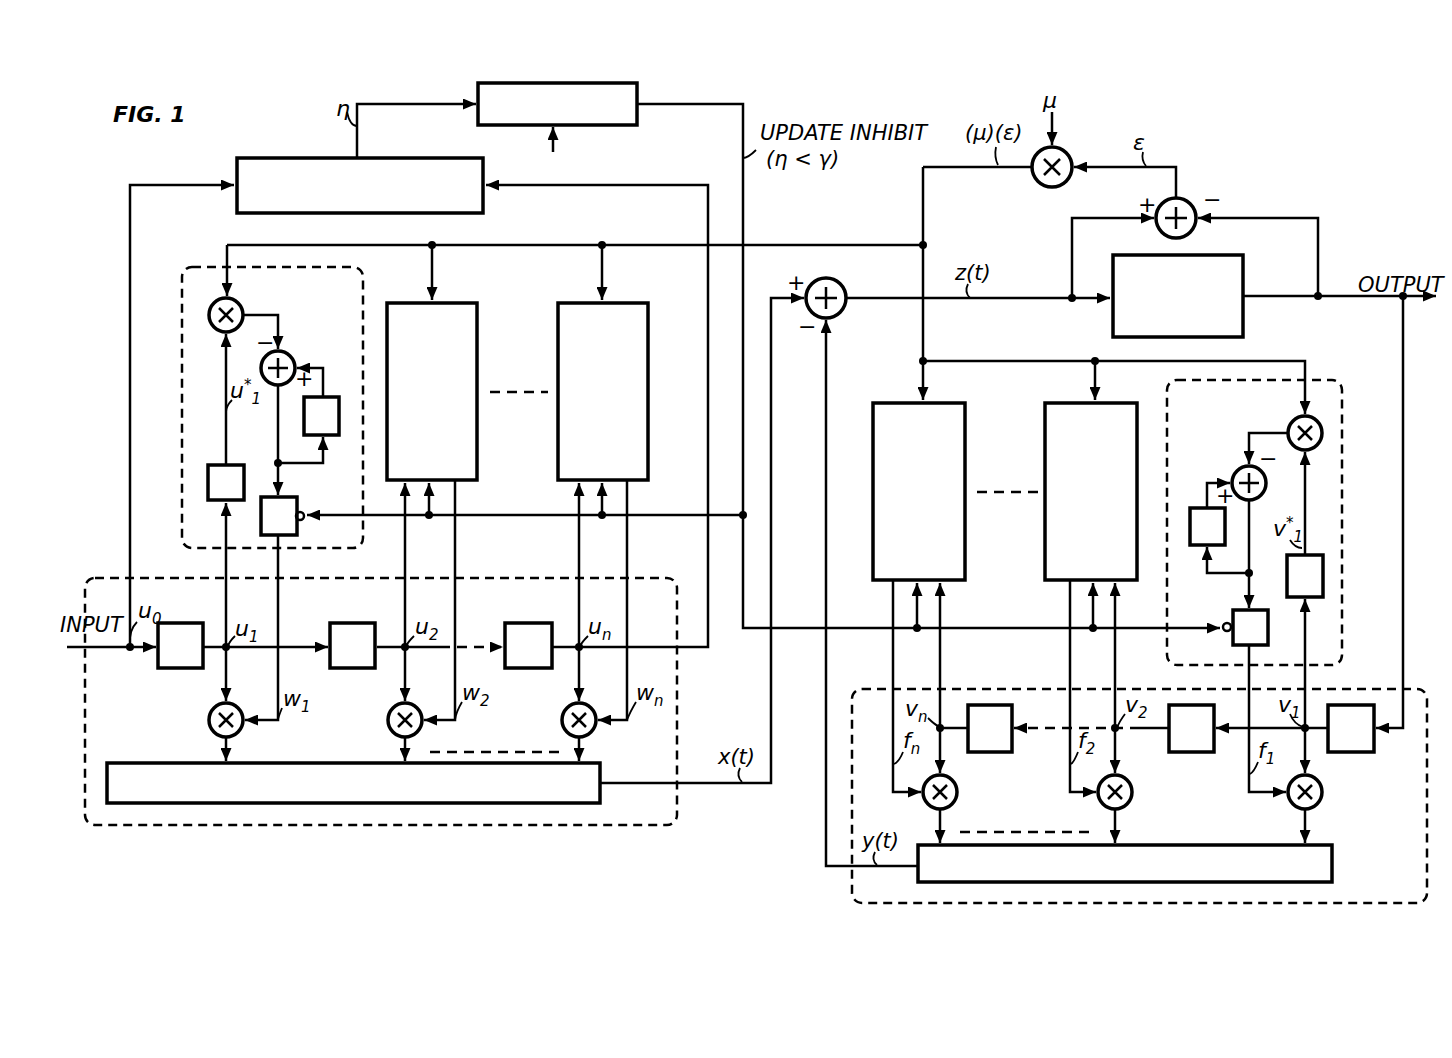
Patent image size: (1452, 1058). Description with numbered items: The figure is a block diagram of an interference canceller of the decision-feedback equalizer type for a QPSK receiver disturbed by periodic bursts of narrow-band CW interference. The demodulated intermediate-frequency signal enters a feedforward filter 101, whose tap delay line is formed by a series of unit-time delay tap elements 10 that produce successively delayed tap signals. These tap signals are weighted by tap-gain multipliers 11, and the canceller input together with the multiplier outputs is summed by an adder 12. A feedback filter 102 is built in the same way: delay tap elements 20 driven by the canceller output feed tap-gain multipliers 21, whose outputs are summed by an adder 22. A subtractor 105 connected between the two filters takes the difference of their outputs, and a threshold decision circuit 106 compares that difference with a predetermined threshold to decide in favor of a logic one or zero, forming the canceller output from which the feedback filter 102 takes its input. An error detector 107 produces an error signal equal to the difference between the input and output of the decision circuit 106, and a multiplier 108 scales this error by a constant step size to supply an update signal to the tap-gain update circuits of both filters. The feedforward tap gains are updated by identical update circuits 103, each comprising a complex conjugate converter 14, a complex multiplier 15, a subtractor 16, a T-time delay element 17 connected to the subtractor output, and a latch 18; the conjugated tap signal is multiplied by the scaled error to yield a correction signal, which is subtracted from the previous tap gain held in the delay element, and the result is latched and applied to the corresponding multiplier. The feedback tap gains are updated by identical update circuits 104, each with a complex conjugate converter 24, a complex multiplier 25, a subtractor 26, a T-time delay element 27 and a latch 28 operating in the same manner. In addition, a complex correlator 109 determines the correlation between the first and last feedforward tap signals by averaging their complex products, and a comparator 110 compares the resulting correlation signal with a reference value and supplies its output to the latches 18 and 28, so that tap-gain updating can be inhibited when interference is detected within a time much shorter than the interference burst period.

The feedforward filter 101 is at (387, 826).
The feedback filter 102 is at (852, 898).
The delay tap elements 10 is at (350, 670).
The tap-gain multipliers 11 is at (382, 730).
The adder 12 is at (600, 770).
The complex conjugate converter 14 is at (209, 466).
The complex multiplier 15 is at (238, 305).
The subtractor 16 is at (290, 355).
The T-time delay element 17 is at (328, 397).
The latch 18 is at (297, 505).
The delay tap elements 20 is at (1173, 753).
The tap-gain multipliers 21 is at (1122, 804).
The adder 22 is at (1332, 850).
The complex conjugate converter 24 is at (1323, 577).
The complex multiplier 25 is at (1292, 420).
The subtractor 26 is at (1236, 472).
The T-time delay element 27 is at (1195, 508).
The latch 28 is at (1228, 620).
The update circuits 103 is at (407, 392).
The update circuits 104 is at (1129, 507).
The subtractor 105 is at (844, 288).
The threshold decision circuit 106 is at (1243, 290).
The error detector 107 is at (1190, 206).
The multiplier 108 is at (1066, 156).
The complex correlator 109 is at (431, 158).
The comparator 110 is at (637, 88).